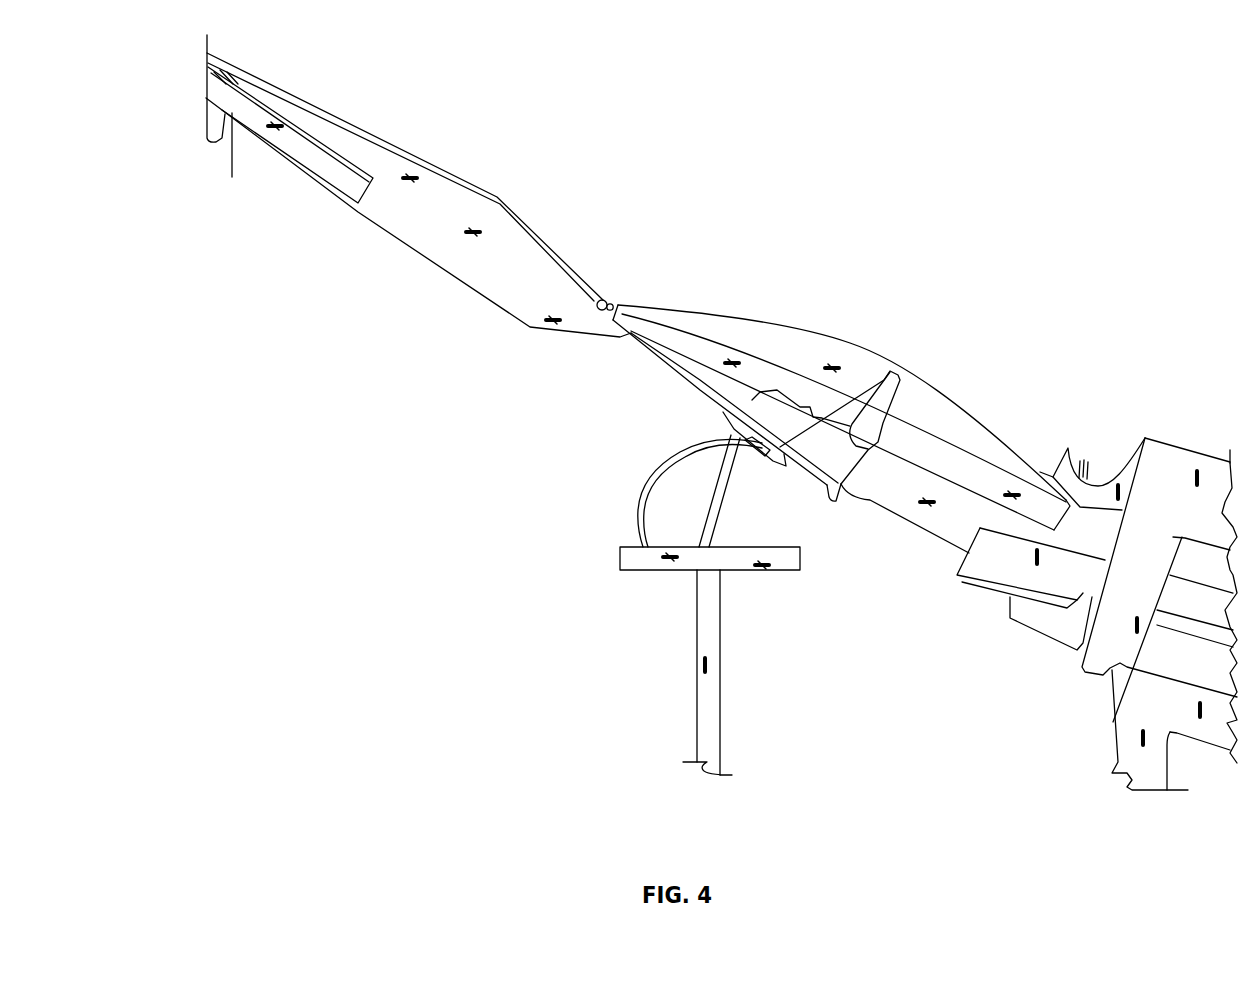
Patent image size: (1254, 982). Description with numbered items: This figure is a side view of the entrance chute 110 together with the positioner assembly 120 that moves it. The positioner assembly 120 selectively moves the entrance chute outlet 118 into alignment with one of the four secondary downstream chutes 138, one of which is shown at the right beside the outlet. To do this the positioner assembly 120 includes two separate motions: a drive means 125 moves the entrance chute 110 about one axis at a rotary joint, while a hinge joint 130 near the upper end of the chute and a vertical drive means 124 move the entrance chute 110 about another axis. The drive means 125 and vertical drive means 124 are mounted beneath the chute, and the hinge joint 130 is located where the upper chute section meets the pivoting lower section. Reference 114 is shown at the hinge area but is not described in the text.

The entrance chute 110 is at (752, 400).
The hinge joint 114 is at (615, 303).
The entrance chute outlet 118 is at (1042, 512).
The positioner assembly 120 is at (790, 443).
The vertical drive means 124 is at (715, 492).
The drive means 125 is at (655, 466).
The hinge joint 130 is at (605, 299).
The secondary downstream chutes 138 is at (1178, 597).